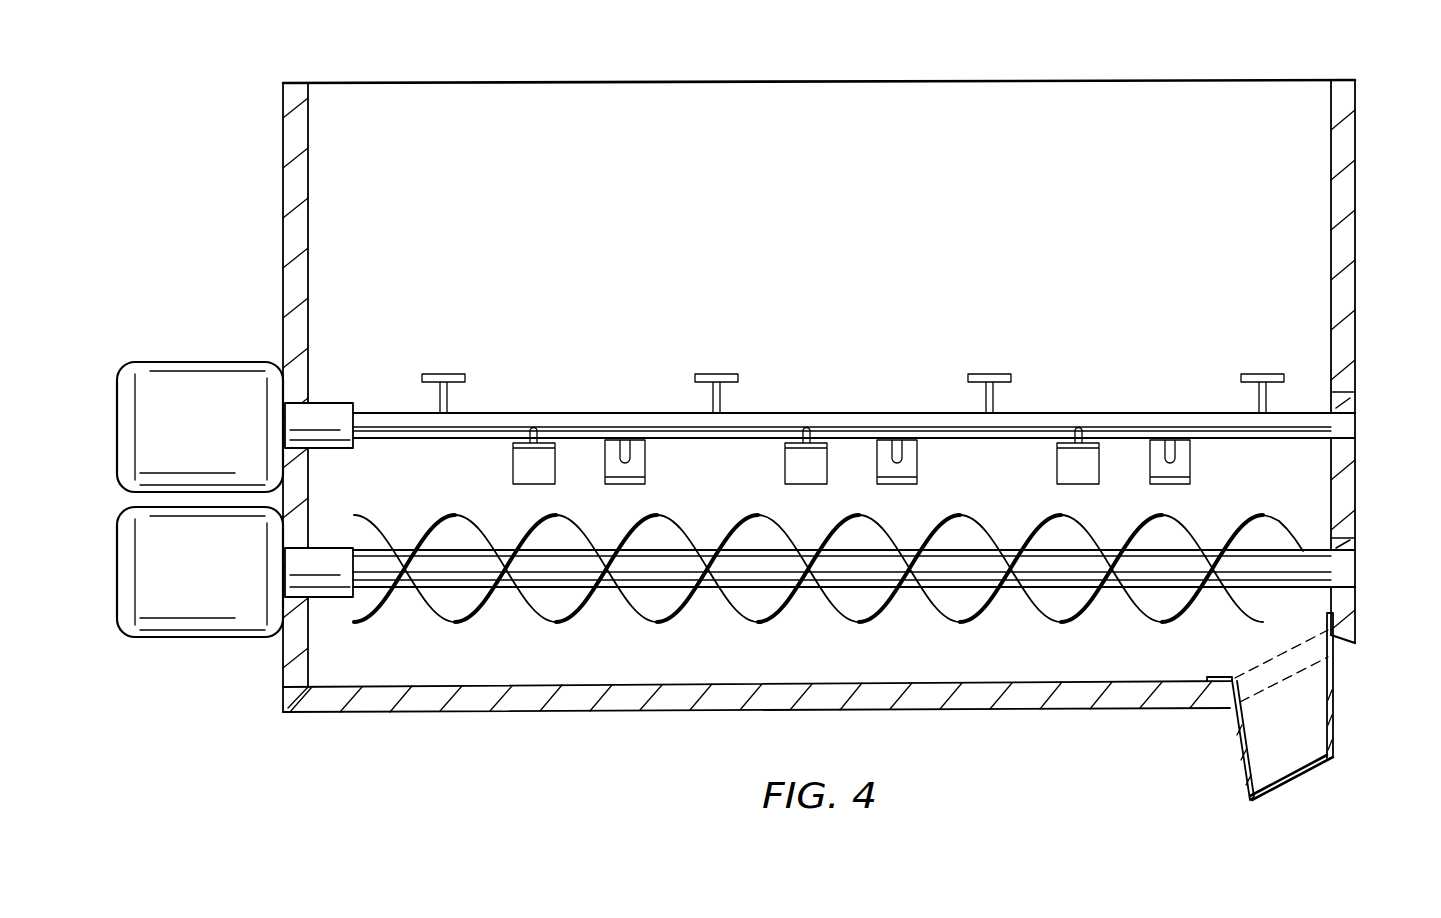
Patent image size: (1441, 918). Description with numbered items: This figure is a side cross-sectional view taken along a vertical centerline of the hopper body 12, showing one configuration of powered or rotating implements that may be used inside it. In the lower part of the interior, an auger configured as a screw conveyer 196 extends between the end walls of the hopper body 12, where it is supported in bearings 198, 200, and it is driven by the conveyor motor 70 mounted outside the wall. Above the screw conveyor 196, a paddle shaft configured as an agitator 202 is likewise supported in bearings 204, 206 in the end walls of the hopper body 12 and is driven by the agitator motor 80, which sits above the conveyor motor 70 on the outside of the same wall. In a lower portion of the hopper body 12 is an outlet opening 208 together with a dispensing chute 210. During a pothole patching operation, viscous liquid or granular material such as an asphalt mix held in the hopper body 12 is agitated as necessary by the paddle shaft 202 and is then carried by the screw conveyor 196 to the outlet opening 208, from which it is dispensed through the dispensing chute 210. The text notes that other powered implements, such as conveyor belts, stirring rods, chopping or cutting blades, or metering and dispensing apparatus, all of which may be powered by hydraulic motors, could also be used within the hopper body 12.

The hopper body 12 is at (283, 138).
The conveyor motor 70 is at (183, 639).
The agitator motor 80 is at (183, 360).
The screw conveyer 196 is at (910, 590).
The bearing 198 is at (300, 548).
The bearing 200 is at (1355, 532).
The agitator 202 is at (856, 412).
The bearing 204 is at (300, 403).
The bearing 206 is at (1355, 398).
The outlet opening 208 is at (1283, 688).
The dispensing chute 210 is at (1334, 734).